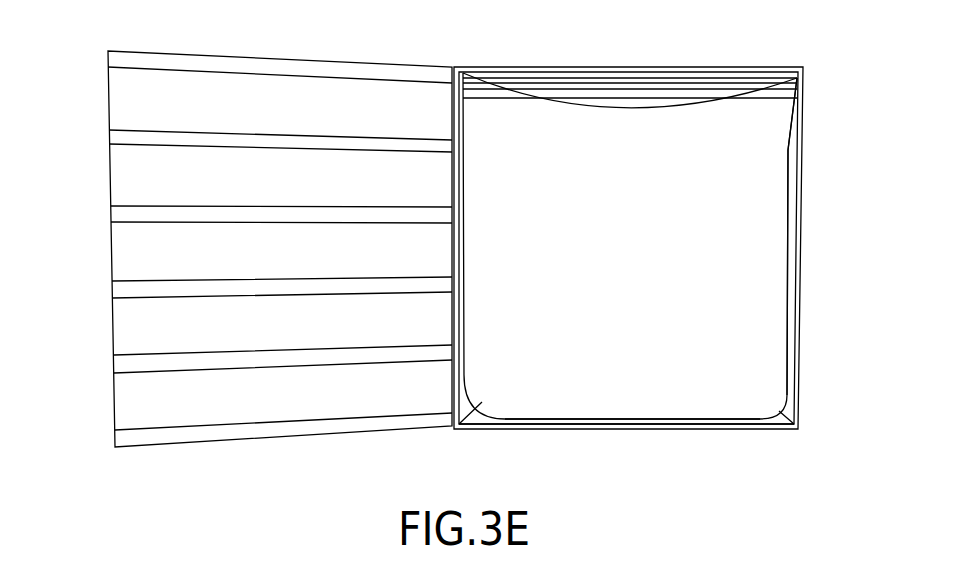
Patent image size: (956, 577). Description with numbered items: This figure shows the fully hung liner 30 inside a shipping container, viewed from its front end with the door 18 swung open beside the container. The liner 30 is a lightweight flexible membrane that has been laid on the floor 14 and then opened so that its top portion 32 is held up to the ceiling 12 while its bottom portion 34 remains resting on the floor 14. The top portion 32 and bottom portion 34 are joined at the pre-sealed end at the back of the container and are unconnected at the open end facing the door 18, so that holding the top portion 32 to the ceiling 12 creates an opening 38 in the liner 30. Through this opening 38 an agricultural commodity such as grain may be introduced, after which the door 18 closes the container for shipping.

The ceiling 12 is at (710, 70).
The floor 14 is at (680, 425).
The door 18 is at (146, 177).
The liner 30 is at (787, 199).
The top portion 32 is at (633, 108).
The bottom portion 34 is at (603, 420).
The opening 38 is at (718, 283).